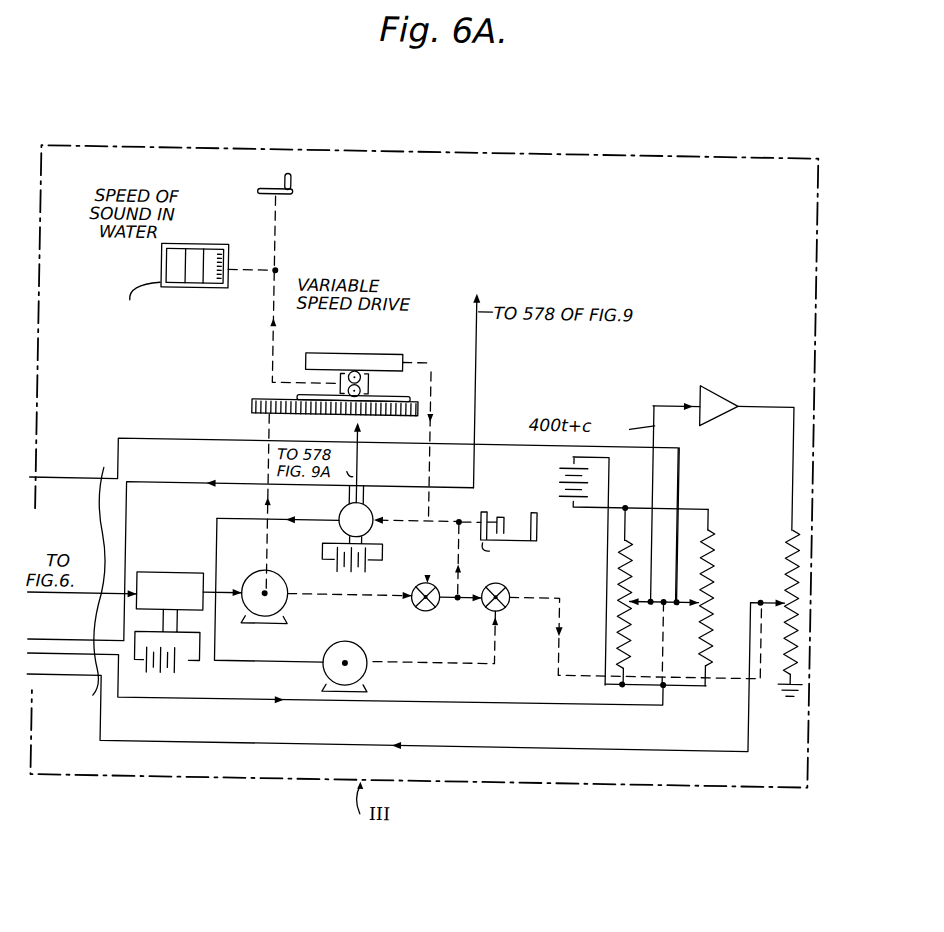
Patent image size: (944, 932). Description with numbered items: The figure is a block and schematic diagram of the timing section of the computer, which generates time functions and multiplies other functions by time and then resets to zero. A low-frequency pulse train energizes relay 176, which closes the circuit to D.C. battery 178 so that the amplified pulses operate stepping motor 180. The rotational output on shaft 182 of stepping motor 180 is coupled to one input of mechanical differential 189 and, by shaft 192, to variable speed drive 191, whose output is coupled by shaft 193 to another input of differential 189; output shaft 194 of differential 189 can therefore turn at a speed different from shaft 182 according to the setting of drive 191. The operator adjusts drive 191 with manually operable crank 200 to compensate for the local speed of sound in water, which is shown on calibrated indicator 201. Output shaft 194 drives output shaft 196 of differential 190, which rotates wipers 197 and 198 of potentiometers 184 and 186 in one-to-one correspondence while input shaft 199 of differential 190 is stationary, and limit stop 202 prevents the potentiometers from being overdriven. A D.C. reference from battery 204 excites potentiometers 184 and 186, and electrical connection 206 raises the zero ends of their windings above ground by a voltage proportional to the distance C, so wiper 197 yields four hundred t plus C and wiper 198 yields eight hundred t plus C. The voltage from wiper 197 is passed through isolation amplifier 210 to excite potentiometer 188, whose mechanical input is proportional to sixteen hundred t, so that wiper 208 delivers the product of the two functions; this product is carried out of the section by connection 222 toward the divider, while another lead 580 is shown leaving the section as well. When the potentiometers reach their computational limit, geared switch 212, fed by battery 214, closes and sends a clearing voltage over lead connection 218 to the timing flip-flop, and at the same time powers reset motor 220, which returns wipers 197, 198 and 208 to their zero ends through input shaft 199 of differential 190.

The manually operable crank 200 is at (288, 194).
The calibrated indicator 201 is at (162, 275).
The variable speed drive 191 is at (334, 351).
The shaft 193 is at (428, 370).
The shaft 192 is at (269, 428).
The lead to 578 580 is at (477, 395).
The isolation amplifier 210 is at (736, 392).
The battery 204 is at (560, 477).
The lead connection 218 is at (172, 485).
The relay 176 is at (167, 577).
The D.C. battery 178 is at (189, 680).
The stepping motor 180 is at (250, 566).
The output shaft 182 is at (337, 599).
The geared switch 212 is at (370, 509).
The battery 214 is at (323, 571).
The limit stop 202 is at (515, 555).
The mechanical differential 189 is at (428, 613).
The output shaft 194 is at (470, 601).
The mechanical differential 190 is at (504, 606).
The output shaft 196 is at (538, 598).
The input shaft 199 is at (500, 662).
The reset motor 220 is at (371, 686).
The electrical connection 206 is at (518, 702).
The connection 222 is at (54, 683).
The potentiometer 184 is at (616, 612).
The wiper 197 is at (647, 603).
The wiper 198 is at (682, 603).
The potentiometer 186 is at (711, 537).
The wiper 208 is at (769, 595).
The potentiometer 188 is at (782, 628).